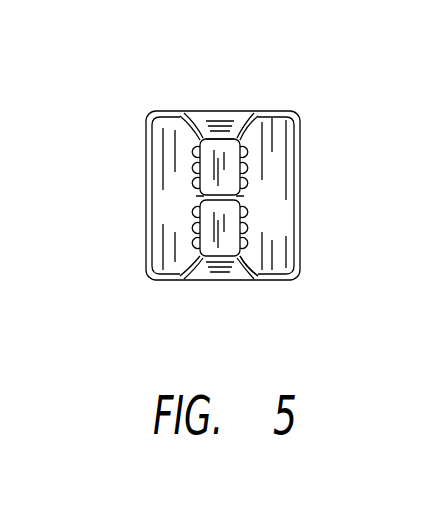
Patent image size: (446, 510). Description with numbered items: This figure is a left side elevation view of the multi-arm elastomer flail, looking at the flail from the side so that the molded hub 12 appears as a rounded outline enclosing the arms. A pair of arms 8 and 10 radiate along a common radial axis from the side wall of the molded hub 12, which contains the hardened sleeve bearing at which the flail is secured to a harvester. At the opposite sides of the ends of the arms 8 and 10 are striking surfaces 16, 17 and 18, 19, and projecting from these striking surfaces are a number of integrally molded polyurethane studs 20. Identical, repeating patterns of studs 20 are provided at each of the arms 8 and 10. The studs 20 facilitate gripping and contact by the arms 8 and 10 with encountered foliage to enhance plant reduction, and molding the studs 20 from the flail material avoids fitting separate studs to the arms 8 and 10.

The arm 8 is at (225, 173).
The arm 10 is at (228, 226).
The molded hub 12 is at (302, 118).
The striking surface 16 is at (238, 138).
The striking surface 17 is at (197, 133).
The striking surface 18 is at (240, 258).
The striking surface 19 is at (195, 260).
The studs 20 is at (196, 212).